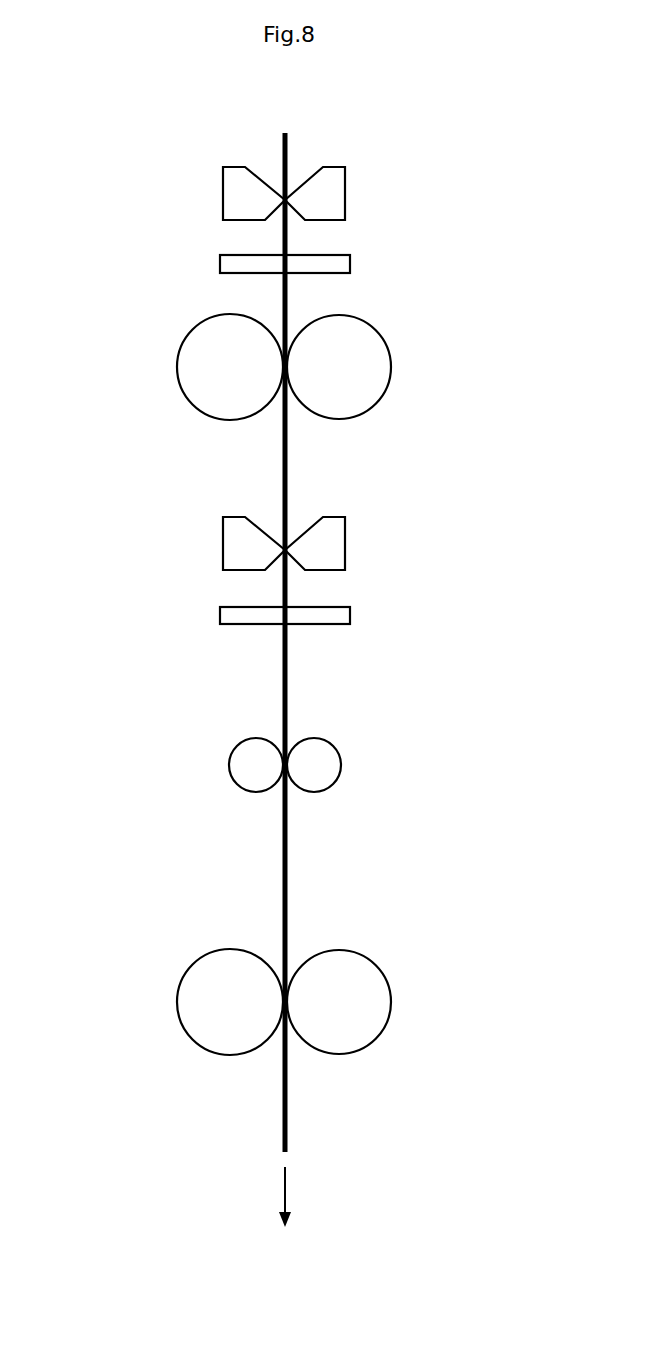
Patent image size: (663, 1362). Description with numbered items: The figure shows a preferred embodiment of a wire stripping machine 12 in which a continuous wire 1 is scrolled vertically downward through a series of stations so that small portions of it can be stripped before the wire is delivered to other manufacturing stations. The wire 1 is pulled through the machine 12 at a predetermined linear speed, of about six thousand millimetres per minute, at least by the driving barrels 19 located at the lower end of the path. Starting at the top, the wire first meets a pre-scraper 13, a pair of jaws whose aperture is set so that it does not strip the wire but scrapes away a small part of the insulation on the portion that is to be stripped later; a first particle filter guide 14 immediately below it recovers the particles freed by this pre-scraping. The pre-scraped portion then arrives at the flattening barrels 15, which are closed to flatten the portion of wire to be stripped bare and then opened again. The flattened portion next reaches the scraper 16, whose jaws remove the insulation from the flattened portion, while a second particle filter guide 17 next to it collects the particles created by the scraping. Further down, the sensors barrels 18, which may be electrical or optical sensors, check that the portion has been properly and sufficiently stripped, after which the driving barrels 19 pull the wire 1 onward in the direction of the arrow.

The wire 1 is at (285, 662).
The wire stripping machine 12 is at (60, 165).
The pre-scraper 13 is at (363, 189).
The first particle filter guide 14 is at (372, 262).
The flattening barrels 15 is at (405, 364).
The scraper 16 is at (369, 541).
The second particle filter guide 17 is at (367, 616).
The sensors barrels 18 is at (365, 767).
The driving barrels 19 is at (408, 1002).